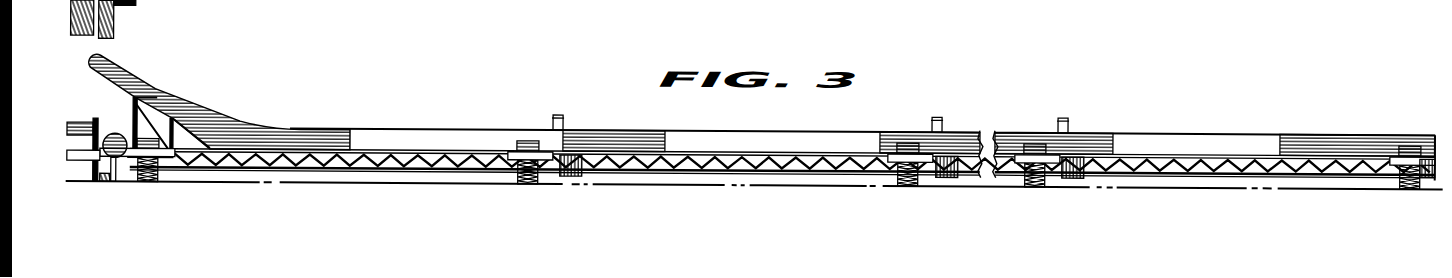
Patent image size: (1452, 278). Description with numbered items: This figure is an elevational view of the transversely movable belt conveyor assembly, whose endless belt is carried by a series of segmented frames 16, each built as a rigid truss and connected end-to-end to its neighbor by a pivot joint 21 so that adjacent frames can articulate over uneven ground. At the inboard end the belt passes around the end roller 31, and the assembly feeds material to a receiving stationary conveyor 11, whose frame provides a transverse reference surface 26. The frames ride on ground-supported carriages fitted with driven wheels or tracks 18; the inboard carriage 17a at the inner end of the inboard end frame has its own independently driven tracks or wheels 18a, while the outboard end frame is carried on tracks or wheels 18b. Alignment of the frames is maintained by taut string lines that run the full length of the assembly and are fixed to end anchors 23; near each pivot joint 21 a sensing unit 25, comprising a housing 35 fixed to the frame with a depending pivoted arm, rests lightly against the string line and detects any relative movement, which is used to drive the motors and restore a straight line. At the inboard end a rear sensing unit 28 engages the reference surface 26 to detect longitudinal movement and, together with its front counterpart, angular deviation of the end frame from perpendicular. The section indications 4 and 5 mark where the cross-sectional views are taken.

The section line 4- 4 is at (97, 44).
The section line 5- 5 is at (522, 95).
The receiving stationary conveyor 11 is at (113, 22).
The segmented frame 16 is at (405, 166).
The inboard carriage 17a is at (208, 128).
The ground-engaging wheels or tracks 18 is at (1412, 184).
The ground-engaging tracks or wheels of inboard carriage 18a is at (200, 212).
The tracks or wheels of outboard carriage 18b is at (525, 180).
The pivot joint 21 is at (570, 174).
The end anchor 23 is at (140, 2).
The sensing unit 25 is at (565, 115).
The reference surface 26 is at (103, 182).
The rear sensing unit 28 is at (120, 134).
The end roller 31 is at (107, 58).
The housing 35 is at (1005, 119).